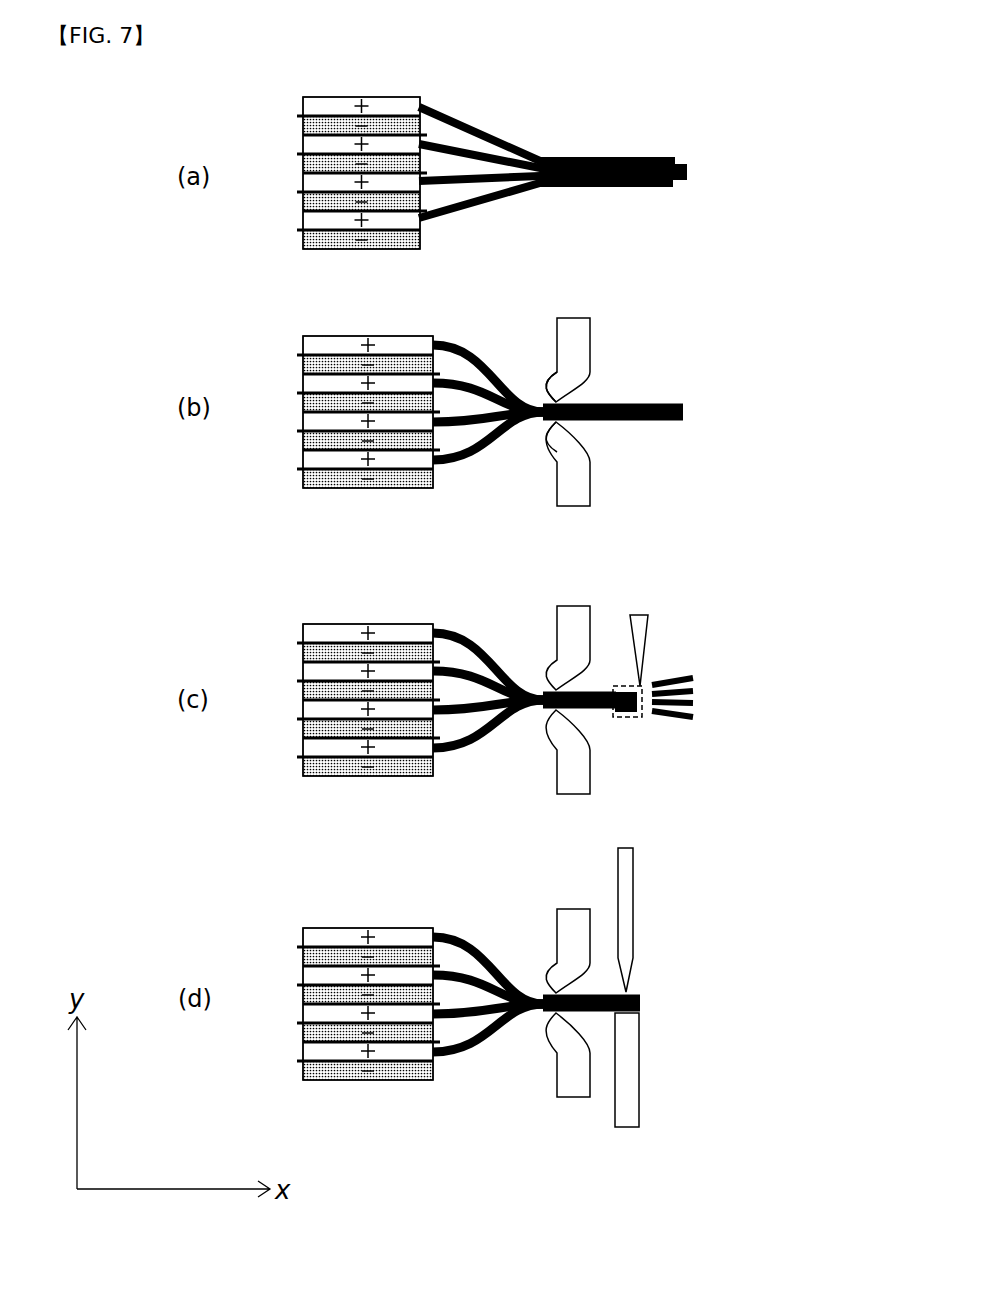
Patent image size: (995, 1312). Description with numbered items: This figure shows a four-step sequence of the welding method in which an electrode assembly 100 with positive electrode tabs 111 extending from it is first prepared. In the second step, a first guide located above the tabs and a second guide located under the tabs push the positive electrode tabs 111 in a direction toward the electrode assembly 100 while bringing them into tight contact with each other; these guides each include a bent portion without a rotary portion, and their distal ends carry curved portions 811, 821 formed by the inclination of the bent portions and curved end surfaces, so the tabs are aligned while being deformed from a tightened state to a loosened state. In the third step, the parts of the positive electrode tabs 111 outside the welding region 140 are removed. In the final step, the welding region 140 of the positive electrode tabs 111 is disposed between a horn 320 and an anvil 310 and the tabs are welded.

The electrode assembly 100 is at (279, 202).
The positive electrode tabs 111 is at (492, 131).
The curved portion 811 is at (582, 381).
The curved portion 821 is at (583, 448).
The welding region 140 is at (625, 716).
The horn 320 is at (638, 909).
The anvil 310 is at (641, 1093).